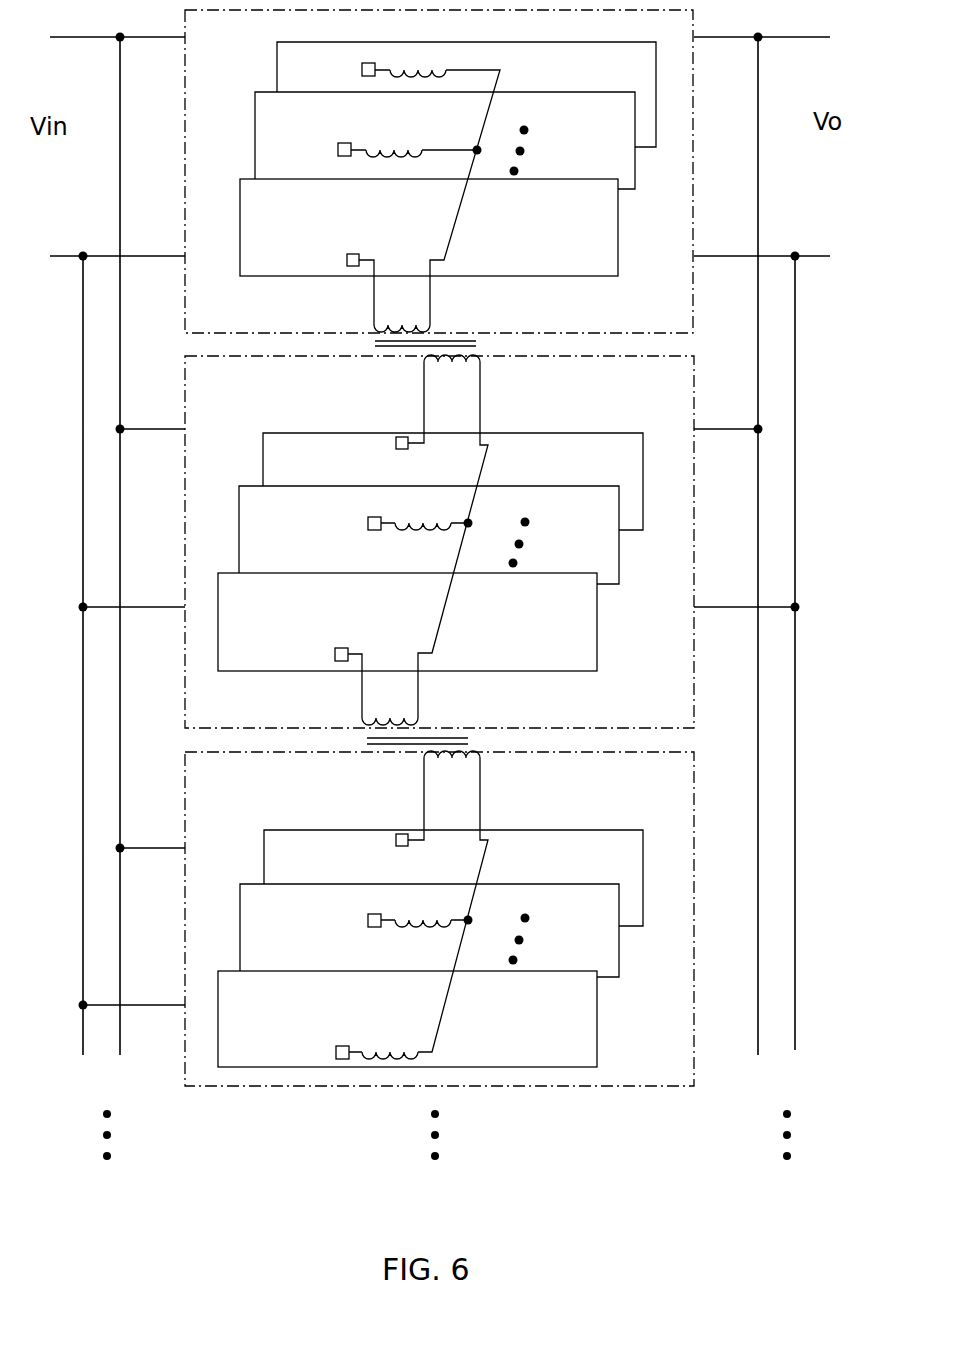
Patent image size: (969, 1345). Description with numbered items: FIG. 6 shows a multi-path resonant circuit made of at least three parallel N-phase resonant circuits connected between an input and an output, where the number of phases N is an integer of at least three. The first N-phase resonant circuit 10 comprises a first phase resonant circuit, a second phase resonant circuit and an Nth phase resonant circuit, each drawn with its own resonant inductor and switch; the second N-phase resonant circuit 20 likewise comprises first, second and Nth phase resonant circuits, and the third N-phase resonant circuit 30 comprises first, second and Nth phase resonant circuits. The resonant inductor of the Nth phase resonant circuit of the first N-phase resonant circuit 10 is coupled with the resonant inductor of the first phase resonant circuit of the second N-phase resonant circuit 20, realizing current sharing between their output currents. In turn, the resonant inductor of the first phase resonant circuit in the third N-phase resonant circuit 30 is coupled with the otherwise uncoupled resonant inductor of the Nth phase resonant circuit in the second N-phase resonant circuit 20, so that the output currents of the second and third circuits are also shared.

The first N-phase resonant circuit 10 is at (693, 117).
The second N-phase resonant circuit 20 is at (694, 393).
The third N-phase resonant circuit 30 is at (694, 853).